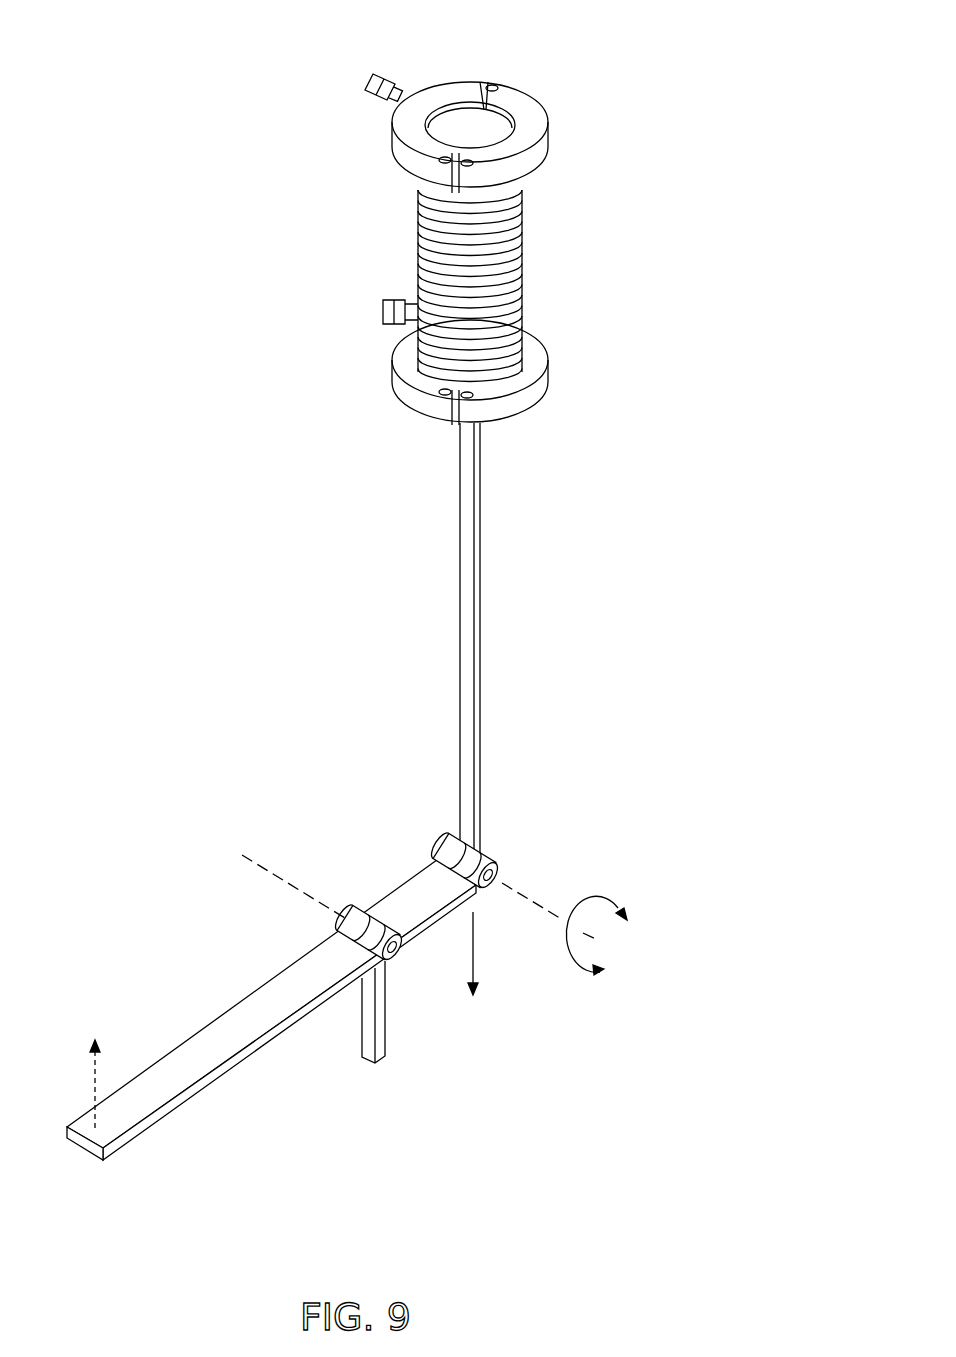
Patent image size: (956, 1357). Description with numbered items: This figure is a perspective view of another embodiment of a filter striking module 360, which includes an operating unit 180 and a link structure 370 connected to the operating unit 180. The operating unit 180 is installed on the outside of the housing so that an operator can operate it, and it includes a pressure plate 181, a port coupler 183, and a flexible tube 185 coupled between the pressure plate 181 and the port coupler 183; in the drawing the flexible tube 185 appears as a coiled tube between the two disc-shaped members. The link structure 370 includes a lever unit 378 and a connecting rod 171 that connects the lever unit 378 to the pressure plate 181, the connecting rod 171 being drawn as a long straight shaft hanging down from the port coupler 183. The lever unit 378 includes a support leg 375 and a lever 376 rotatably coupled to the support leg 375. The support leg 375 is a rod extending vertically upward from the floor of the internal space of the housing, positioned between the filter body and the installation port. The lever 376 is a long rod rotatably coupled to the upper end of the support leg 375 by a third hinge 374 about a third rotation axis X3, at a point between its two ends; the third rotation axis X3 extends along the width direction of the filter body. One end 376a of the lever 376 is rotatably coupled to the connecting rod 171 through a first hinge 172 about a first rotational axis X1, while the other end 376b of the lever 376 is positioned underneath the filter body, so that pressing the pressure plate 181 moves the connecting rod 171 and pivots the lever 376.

The filter striking module 360 is at (373, 614).
The operating unit 180 is at (500, 225).
The pressure plate 181 is at (468, 118).
The port coupler 183 is at (545, 382).
The flexible tube 185 is at (418, 240).
The connecting rod 171 is at (482, 600).
The first hinge 172 is at (500, 870).
The link structure 370 is at (347, 979).
The third hinge 374 is at (398, 957).
The support leg 375 is at (383, 1050).
The lever 376 is at (271, 1039).
The one end of the lever 376a is at (440, 848).
The other end of the lever 376b is at (120, 1145).
The lever unit 378 is at (292, 1080).
The first rotational axis X1 is at (565, 918).
The third rotation axis X3 is at (283, 880).